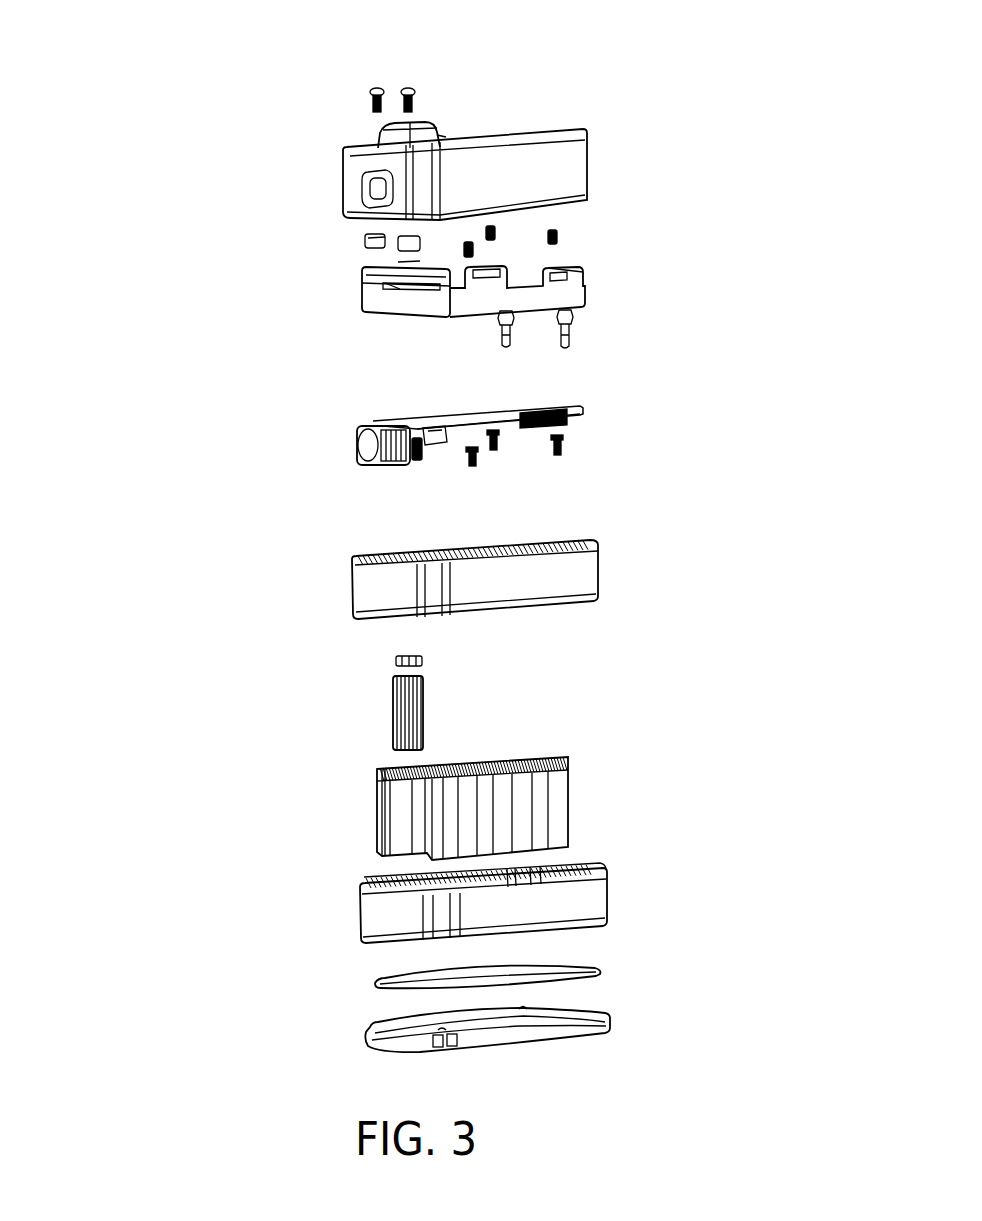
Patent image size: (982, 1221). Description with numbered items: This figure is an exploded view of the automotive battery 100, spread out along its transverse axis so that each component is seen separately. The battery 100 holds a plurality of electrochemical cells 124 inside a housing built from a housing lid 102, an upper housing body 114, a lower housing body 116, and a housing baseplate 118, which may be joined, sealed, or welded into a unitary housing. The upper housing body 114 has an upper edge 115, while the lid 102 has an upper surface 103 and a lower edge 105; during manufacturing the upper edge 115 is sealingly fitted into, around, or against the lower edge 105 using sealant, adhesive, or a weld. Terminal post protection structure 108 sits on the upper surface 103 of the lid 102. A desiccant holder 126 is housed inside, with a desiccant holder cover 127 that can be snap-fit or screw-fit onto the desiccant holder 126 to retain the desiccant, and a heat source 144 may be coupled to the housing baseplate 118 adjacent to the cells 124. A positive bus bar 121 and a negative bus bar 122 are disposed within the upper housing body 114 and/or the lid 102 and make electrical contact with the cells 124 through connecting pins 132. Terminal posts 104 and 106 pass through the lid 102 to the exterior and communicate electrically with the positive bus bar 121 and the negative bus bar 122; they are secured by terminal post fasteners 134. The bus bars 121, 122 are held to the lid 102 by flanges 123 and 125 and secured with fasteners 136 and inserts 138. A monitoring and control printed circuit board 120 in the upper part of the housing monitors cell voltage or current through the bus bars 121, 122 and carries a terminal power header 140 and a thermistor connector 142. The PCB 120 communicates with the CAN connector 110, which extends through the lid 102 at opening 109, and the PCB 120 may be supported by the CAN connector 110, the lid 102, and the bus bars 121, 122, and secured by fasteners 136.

The automotive battery 100 is at (182, 52).
The housing lid 102 is at (536, 108).
The upper surface 103 is at (503, 118).
The terminal post 104 is at (368, 238).
The lower edge 105 is at (502, 227).
The terminal post 106 is at (372, 262).
The terminal post protection structure 108 is at (428, 118).
The opening 109 is at (365, 186).
The CAN connector 110 is at (357, 438).
The upper housing body 114 is at (616, 576).
The upper edge 115 is at (355, 590).
The lower housing body 116 is at (630, 898).
The housing baseplate 118 is at (630, 1030).
The monitoring and control printed circuit board 120 is at (560, 398).
The positive bus bar 121 is at (365, 298).
The negative bus bar 122 is at (553, 295).
The flange 123 is at (422, 282).
The electrochemical cells 124 is at (532, 817).
The flange 125 is at (583, 273).
The desiccant holder 126 is at (395, 737).
The desiccant holder cover 127 is at (393, 662).
The connecting pins 132 is at (512, 345).
The terminal post fasteners 134 is at (404, 92).
The fasteners 136 is at (563, 450).
The inserts 138 is at (476, 247).
The terminal power header 140 is at (573, 423).
The thermistor connector 142 is at (433, 448).
The heat source 144 is at (350, 993).